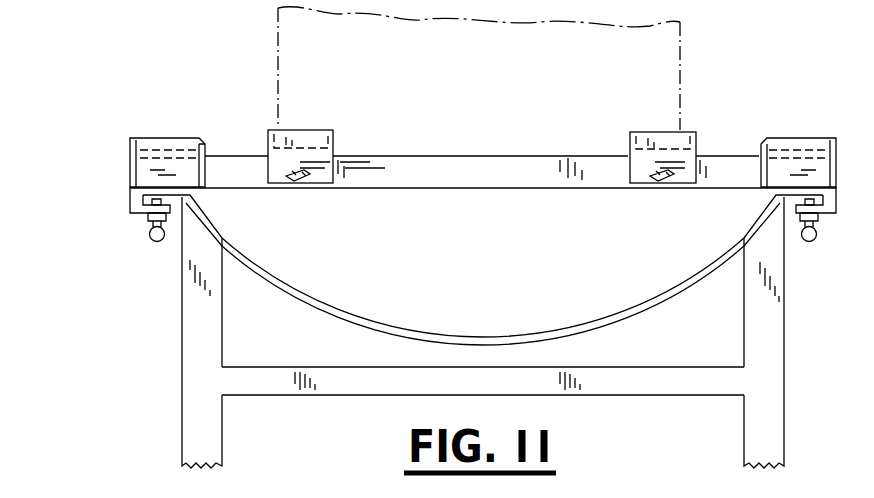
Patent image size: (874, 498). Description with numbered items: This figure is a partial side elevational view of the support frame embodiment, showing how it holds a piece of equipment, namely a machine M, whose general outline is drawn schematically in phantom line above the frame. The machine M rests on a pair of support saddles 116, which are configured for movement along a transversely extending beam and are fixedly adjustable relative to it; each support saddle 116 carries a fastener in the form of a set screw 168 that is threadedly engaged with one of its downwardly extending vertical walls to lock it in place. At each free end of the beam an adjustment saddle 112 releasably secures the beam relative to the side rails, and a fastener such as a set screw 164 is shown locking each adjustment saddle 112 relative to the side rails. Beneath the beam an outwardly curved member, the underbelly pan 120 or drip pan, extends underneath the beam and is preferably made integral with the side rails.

The machine M is at (278, 36).
The adjustment saddle 112 is at (130, 165).
The support saddle 116 is at (268, 140).
The underbelly pan 120 is at (472, 337).
The set screw 164 is at (151, 240).
The set screw 168 is at (305, 186).